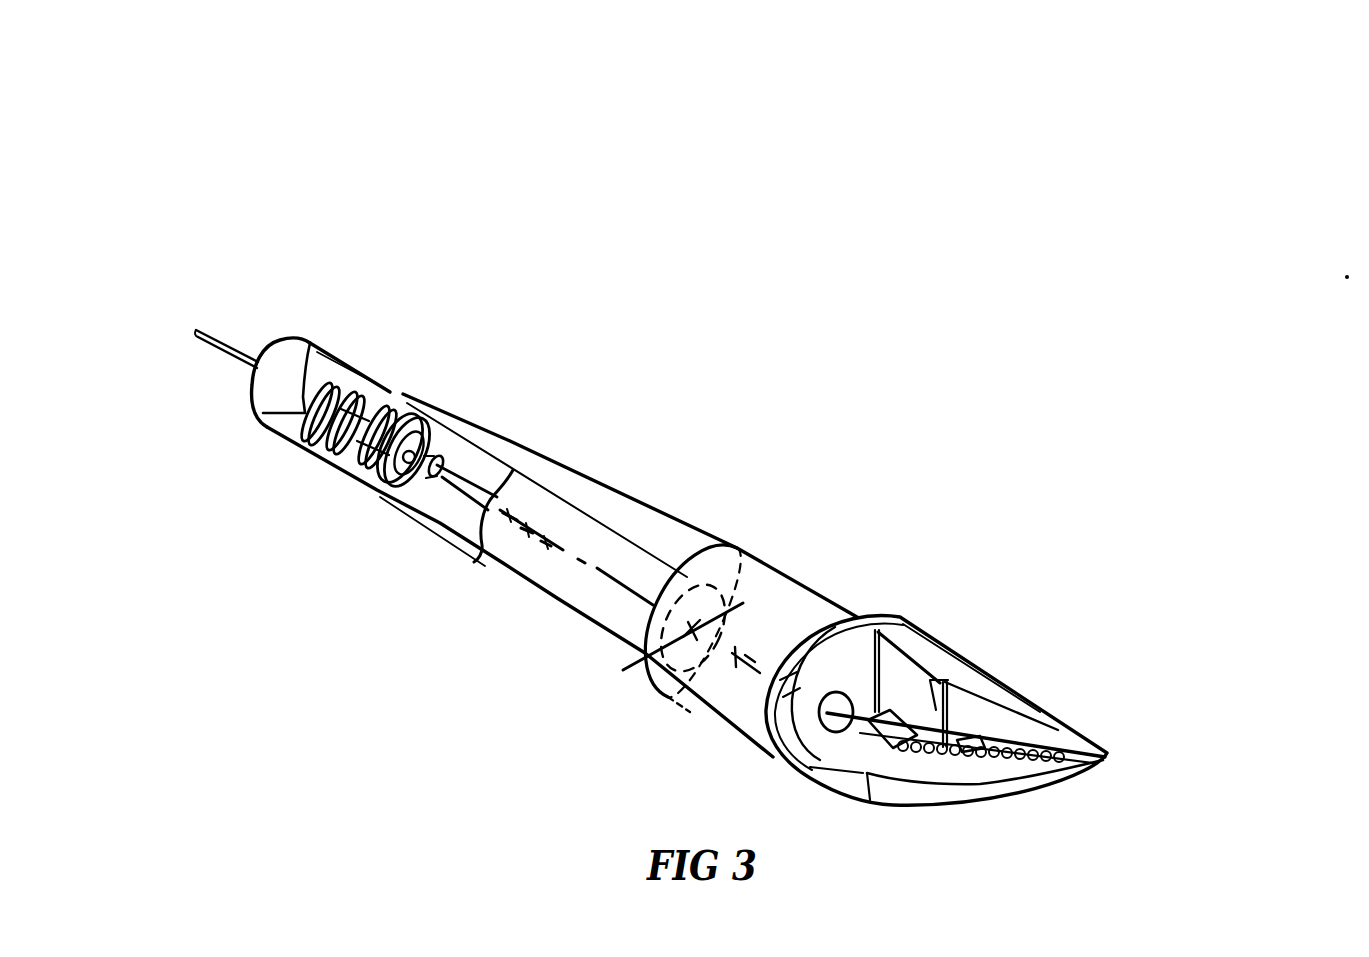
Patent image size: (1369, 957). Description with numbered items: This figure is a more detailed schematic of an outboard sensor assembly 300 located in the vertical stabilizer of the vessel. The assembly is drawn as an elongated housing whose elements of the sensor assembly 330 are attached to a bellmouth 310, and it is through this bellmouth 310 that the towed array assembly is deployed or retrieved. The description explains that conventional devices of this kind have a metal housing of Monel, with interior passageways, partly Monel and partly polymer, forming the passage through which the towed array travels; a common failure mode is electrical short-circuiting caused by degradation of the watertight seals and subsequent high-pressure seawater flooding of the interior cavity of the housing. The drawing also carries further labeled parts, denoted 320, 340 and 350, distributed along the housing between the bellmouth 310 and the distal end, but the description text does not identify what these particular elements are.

The outboard sensor assembly 300 is at (257, 187).
The bellmouth 310 is at (250, 392).
The spool 320 is at (395, 485).
The sensor assembly 330 is at (393, 407).
The inner tube 340 is at (740, 663).
The distal head 350 is at (1105, 755).